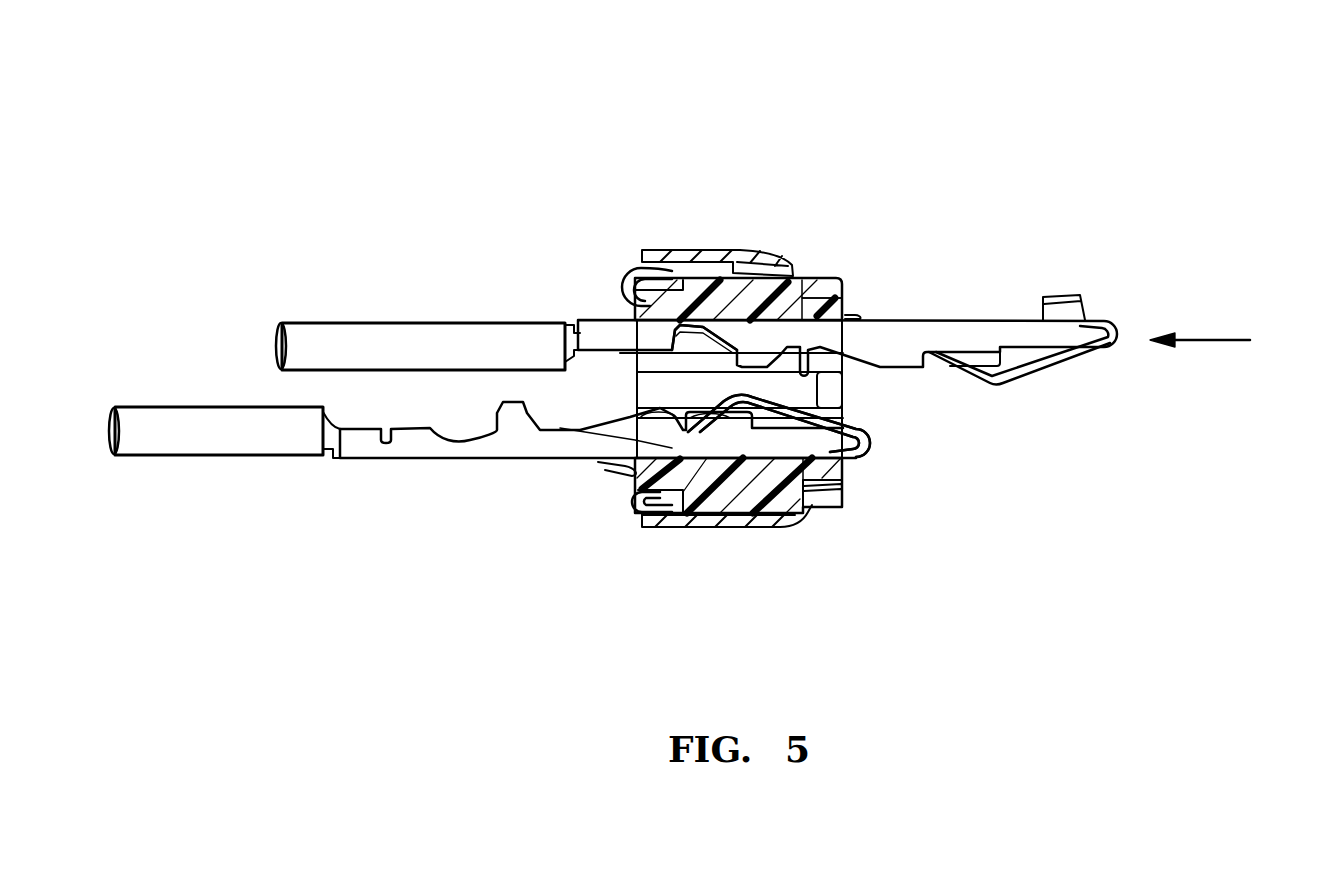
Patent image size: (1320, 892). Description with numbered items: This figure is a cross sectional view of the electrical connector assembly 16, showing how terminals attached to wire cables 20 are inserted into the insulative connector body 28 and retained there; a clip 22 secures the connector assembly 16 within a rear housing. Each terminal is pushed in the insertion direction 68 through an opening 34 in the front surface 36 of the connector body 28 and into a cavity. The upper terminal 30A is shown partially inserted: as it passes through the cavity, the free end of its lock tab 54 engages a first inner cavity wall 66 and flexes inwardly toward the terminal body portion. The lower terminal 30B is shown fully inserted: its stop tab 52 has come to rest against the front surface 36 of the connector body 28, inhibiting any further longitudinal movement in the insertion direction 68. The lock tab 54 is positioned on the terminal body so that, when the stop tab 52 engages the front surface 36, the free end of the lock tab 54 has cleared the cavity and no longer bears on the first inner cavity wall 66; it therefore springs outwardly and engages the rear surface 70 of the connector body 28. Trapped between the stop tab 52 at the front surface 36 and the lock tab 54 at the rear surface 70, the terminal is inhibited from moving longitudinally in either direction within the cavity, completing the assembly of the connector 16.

The electrical connector assembly 16 is at (641, 133).
The wire cables 20 is at (388, 335).
The clip 22 is at (735, 288).
The connector body 28 is at (722, 290).
The upper terminal 30A is at (937, 322).
The lower terminal 30B is at (522, 440).
The opening 34 is at (690, 353).
The front surface 36 is at (805, 263).
The stop tab 52 is at (1060, 305).
The lock tab 54 is at (855, 318).
The first inner cavity wall 66 is at (840, 295).
The insertion direction 68 is at (1213, 340).
The rear surface 70 is at (628, 272).